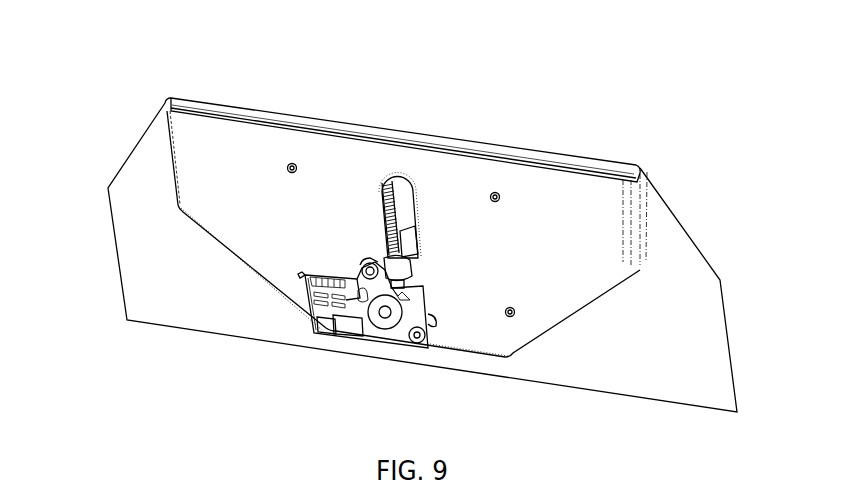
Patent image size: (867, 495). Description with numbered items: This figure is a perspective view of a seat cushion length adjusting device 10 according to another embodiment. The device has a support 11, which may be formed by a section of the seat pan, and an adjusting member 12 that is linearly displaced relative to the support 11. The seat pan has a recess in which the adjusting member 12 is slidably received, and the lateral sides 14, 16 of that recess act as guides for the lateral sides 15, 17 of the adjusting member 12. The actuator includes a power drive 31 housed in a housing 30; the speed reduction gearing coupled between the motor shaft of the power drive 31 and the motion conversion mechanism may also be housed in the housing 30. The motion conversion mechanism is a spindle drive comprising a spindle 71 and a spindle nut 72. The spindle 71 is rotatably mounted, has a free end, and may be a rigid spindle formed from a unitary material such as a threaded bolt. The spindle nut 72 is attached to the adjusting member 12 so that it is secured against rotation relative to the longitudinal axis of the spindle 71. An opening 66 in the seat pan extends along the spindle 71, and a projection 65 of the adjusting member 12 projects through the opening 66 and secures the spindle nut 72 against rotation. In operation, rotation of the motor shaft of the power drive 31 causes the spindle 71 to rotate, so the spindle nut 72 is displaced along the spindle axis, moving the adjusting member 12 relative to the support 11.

The seat cushion length adjusting device 10 is at (105, 33).
The support 11 is at (180, 323).
The adjusting member 12 is at (408, 132).
The lateral side of the recess 14 is at (632, 168).
The lateral side of the adjusting member 15 is at (620, 167).
The lateral side of the recess 16 is at (168, 98).
The lateral side of the adjusting member 17 is at (172, 107).
The housing 30 is at (317, 333).
The power drive 31 is at (343, 333).
The projection 65 is at (412, 252).
The opening 66 is at (415, 212).
The spindle 71 is at (388, 225).
The spindle nut 72 is at (397, 272).